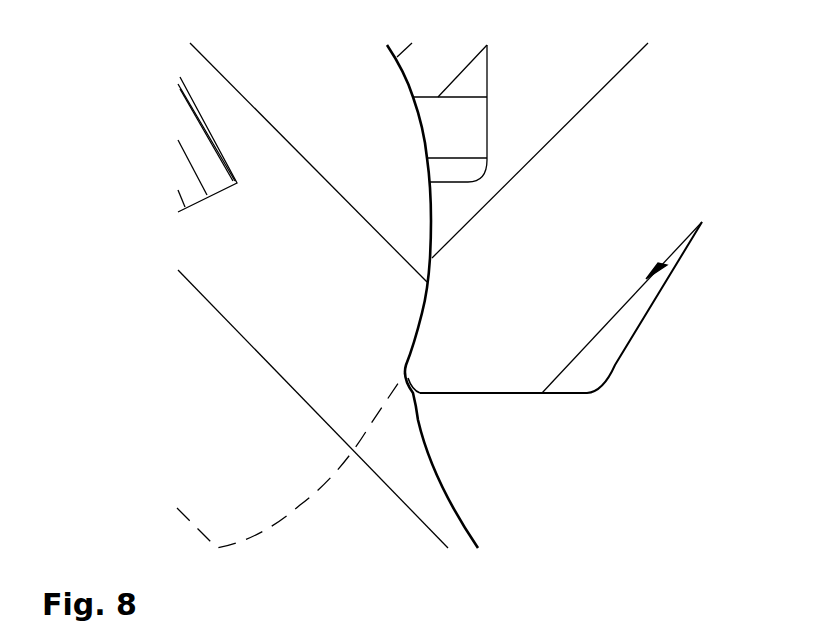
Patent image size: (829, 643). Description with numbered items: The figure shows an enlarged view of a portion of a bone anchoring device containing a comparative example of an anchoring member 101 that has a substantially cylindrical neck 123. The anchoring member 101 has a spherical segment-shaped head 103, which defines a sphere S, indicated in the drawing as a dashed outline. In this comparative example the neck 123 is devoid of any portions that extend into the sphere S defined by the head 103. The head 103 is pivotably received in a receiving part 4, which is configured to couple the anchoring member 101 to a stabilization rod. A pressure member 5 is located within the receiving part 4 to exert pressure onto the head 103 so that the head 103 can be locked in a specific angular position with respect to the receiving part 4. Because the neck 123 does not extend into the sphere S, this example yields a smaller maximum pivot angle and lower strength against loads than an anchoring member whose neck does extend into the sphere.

The receiving part 4 is at (655, 272).
The pressure member 5 is at (458, 55).
The anchoring member 101 is at (488, 486).
The spherical segment-shaped head 103 is at (240, 266).
The neck 123 is at (423, 440).
The sphere S is at (325, 480).